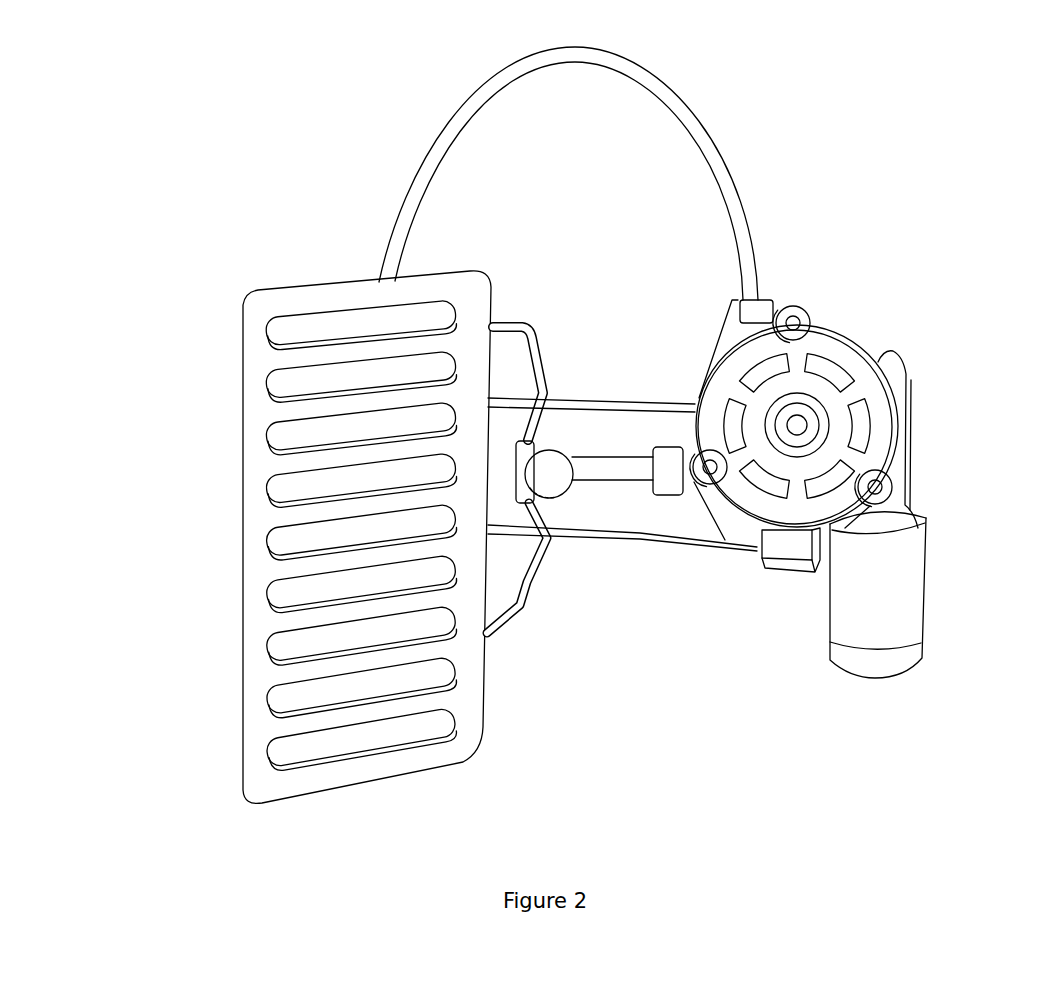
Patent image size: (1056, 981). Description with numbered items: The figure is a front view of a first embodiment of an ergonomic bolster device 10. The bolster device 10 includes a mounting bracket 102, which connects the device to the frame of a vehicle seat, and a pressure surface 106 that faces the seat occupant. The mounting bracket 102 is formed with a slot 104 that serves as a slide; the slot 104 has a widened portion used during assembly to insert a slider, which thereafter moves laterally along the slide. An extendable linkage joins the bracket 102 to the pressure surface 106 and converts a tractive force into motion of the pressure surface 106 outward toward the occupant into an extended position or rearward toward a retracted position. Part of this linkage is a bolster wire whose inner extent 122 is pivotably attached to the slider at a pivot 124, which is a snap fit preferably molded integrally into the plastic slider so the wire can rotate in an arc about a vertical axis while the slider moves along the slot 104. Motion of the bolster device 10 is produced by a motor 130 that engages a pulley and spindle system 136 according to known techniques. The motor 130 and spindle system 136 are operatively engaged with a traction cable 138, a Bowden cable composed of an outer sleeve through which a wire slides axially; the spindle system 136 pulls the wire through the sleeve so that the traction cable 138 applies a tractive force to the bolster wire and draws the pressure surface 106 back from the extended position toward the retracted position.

The bolster device 10 is at (948, 210).
The mounting bracket 102 is at (672, 520).
The slot 104 is at (608, 473).
The pressure surface 106 is at (250, 320).
The inner extent 122 is at (532, 315).
The pivot 124 is at (548, 458).
The motor 130 is at (898, 558).
The pulley and spindle system 136 is at (837, 400).
The traction cable 138 is at (635, 73).